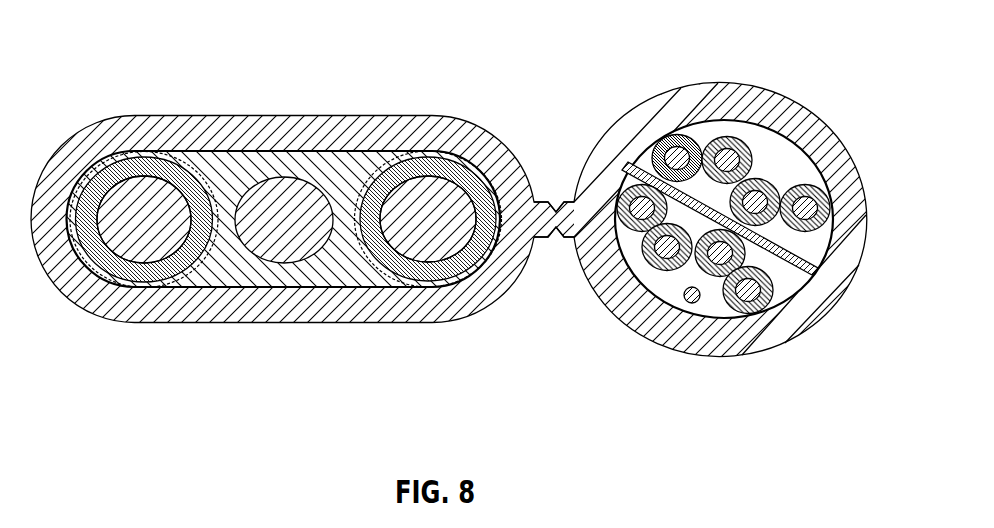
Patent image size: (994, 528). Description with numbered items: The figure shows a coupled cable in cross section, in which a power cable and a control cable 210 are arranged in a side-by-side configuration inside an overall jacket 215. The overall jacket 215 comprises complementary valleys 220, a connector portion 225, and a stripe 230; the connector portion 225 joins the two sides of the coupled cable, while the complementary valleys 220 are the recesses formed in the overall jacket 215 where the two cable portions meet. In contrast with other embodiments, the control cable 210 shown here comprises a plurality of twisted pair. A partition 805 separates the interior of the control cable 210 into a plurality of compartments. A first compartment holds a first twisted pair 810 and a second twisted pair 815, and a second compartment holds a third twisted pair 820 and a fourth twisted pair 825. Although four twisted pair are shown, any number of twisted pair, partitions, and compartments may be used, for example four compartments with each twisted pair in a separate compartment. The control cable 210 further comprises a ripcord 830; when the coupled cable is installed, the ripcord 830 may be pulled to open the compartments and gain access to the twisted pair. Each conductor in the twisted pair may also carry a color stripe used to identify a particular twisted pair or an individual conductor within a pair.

The control cable 210 is at (779, 376).
The overall jacket 215 is at (833, 143).
The complementary valleys 220 is at (565, 135).
The connector portion 225 is at (558, 192).
The stripe 230 is at (863, 220).
The partition 805 is at (787, 266).
The first twisted pair 810 is at (704, 117).
The second twisted pair 815 is at (770, 144).
The third twisted pair 820 is at (636, 254).
The fourth twisted pair 825 is at (711, 305).
The ripcord 830 is at (693, 304).